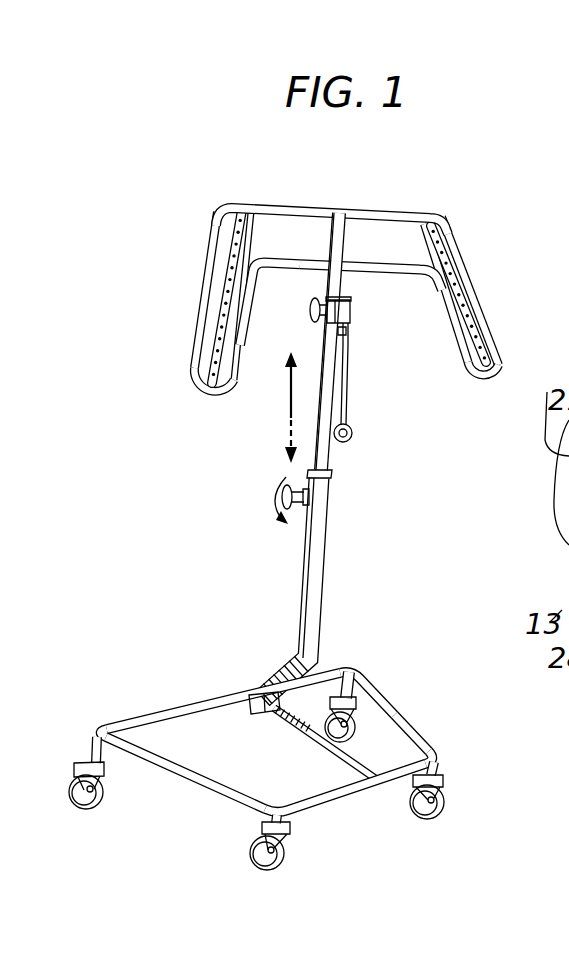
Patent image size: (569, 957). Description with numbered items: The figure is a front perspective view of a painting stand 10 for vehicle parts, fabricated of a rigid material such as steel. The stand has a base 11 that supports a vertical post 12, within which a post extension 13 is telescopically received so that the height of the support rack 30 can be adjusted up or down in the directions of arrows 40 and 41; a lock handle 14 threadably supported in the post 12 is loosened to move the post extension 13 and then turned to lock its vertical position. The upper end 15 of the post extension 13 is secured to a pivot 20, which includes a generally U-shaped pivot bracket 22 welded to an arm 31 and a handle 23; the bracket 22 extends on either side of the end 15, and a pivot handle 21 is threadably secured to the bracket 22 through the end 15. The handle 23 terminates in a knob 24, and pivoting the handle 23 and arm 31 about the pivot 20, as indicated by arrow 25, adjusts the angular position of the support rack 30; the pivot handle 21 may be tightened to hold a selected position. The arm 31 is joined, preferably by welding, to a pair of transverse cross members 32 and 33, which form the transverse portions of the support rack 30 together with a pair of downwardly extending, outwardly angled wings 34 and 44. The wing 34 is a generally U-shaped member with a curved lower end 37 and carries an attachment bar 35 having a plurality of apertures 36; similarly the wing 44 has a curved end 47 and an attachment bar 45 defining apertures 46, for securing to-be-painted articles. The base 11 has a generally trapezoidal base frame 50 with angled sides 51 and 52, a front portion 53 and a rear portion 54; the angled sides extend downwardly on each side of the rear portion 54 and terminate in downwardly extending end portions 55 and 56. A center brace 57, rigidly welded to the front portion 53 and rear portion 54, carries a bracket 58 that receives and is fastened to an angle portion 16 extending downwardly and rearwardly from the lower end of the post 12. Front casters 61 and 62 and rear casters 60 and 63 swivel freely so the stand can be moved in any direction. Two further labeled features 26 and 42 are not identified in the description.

The painting stand 10 is at (212, 552).
The base 11 is at (405, 700).
The vertical post 12 is at (320, 547).
The post extension 13 is at (328, 452).
The lock handle 14 is at (273, 493).
The upper end 15 is at (312, 290).
The angle portion 16 is at (280, 672).
The pivot 20 is at (300, 334).
The pivot handle 21 is at (308, 313).
The pivot bracket 22 is at (347, 345).
The handle 23 is at (345, 384).
The knob 24 is at (355, 428).
The arrow 25 is at (354, 315).
The bracket lower block 26 is at (330, 336).
The support rack 30 is at (380, 205).
The arm 31 is at (357, 268).
The cross member 32 is at (322, 204).
The cross member 33 is at (280, 253).
The wing 34 is at (458, 258).
The attachment bar 35 is at (437, 233).
The apertures 36 is at (467, 303).
The curved lower end 37 is at (503, 375).
The arrow 40 is at (288, 387).
The arrow 41 is at (287, 435).
The rotation arrow 42 is at (270, 518).
The wing 44 is at (203, 280).
The attachment bar 45 is at (217, 312).
The apertures 46 is at (220, 343).
The curved end 47 is at (200, 398).
The base frame 50 is at (441, 734).
The angled side 51 is at (418, 712).
The angled side 52 is at (190, 772).
The front portion 53 is at (365, 792).
The rear portion 54 is at (262, 714).
The end portion 55 is at (357, 687).
The end portion 56 is at (92, 755).
The center brace 57 is at (442, 764).
The bracket 58 is at (245, 697).
The rear caster 60 is at (353, 733).
The front caster 61 is at (440, 817).
The front caster 62 is at (287, 866).
The rear caster 63 is at (83, 805).